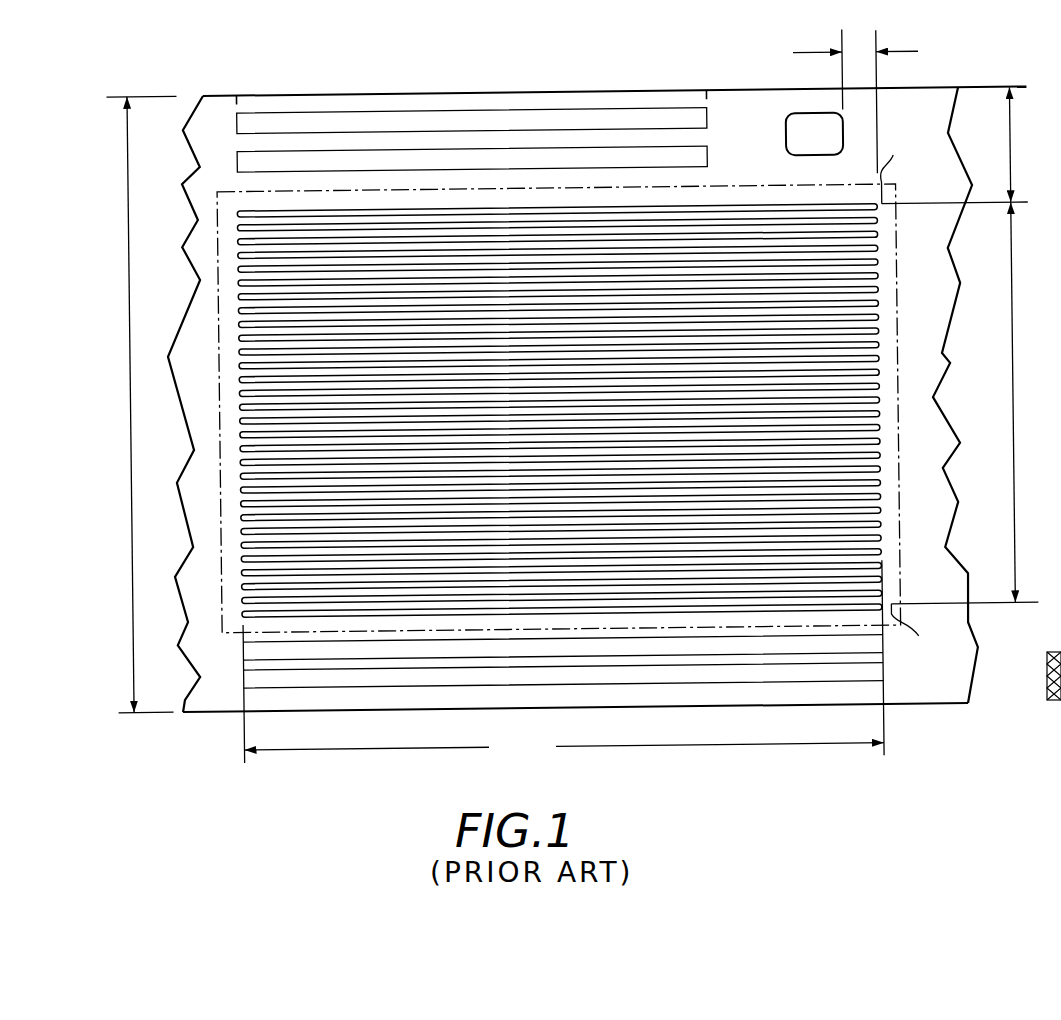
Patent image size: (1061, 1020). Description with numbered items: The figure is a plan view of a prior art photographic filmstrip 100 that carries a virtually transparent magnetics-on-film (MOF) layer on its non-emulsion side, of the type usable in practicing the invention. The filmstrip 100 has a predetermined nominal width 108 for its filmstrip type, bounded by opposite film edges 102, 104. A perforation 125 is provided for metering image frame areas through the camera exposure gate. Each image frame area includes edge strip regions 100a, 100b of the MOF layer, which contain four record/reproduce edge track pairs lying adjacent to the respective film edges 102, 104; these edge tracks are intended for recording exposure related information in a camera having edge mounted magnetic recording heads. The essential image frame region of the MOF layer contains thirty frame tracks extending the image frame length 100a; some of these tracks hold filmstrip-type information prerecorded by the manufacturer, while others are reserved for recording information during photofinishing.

The filmstrip 100 is at (964, 92).
The edge strip region 100a is at (564, 745).
The edge strip region 100b is at (736, 105).
The film edge 102 is at (215, 708).
The film edge 104 is at (376, 90).
The nominal width 108 is at (144, 404).
The perforation 125 is at (793, 118).